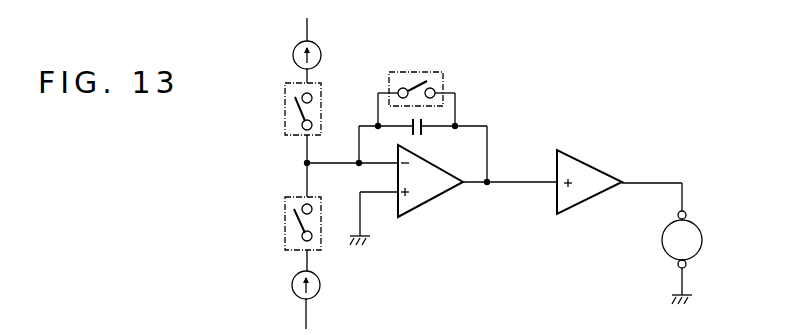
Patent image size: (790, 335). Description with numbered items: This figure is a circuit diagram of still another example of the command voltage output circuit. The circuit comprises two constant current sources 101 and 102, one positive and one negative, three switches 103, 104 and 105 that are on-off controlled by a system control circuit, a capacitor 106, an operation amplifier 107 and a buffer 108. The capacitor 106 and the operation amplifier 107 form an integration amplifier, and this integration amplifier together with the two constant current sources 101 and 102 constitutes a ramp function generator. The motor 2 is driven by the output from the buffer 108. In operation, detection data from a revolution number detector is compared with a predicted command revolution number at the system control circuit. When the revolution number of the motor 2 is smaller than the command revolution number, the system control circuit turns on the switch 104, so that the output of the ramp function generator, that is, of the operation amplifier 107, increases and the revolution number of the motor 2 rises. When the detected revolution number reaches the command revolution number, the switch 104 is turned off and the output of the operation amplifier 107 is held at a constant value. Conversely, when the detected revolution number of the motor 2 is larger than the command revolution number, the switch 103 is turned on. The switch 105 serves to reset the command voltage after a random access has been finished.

The constant current source 101 is at (318, 46).
The constant current source 102 is at (318, 290).
The switch 103 is at (285, 118).
The switch 104 is at (285, 238).
The switch 105 is at (420, 72).
The capacitor 106 is at (420, 136).
The operation amplifier 107 is at (433, 198).
The buffer 108 is at (590, 203).
The motor 2 is at (702, 202).